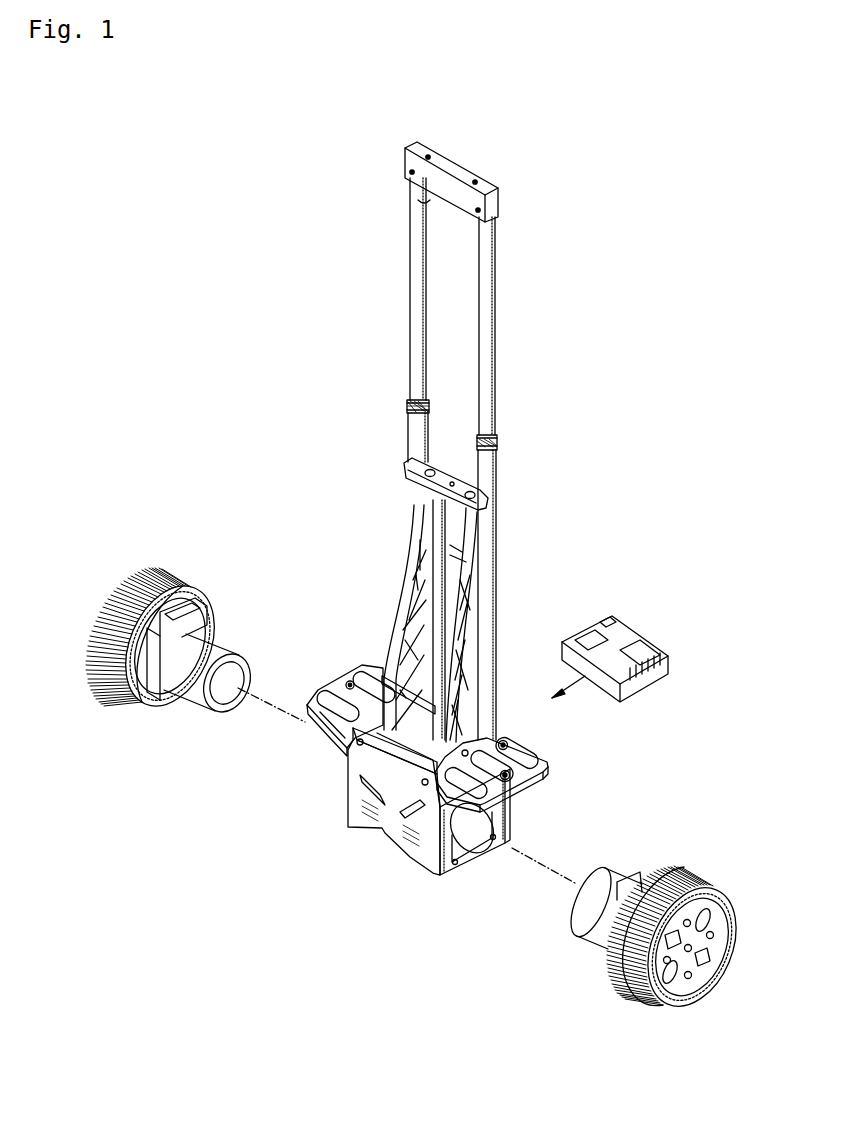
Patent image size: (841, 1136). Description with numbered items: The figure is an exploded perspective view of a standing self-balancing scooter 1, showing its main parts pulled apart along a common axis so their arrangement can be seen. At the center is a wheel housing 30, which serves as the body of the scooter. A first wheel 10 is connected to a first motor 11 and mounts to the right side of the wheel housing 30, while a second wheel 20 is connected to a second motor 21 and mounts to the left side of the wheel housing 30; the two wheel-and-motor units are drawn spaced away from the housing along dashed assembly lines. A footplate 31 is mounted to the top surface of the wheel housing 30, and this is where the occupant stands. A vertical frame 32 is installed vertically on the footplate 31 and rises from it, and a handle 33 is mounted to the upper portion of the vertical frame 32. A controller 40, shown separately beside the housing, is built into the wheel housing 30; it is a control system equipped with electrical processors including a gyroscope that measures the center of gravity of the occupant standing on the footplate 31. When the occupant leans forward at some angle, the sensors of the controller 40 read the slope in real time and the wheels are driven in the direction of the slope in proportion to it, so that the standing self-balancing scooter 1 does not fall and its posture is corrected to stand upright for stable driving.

The standing self-balancing scooter 1 is at (248, 372).
The first wheel 10 is at (676, 870).
The first motor 11 is at (590, 925).
The second wheel 20 is at (152, 573).
The second motor 21 is at (195, 695).
The wheel housing 30 is at (397, 832).
The footplate 31 is at (335, 690).
The vertical frame 32 is at (412, 345).
The handle 33 is at (453, 170).
The controller 40 is at (598, 617).